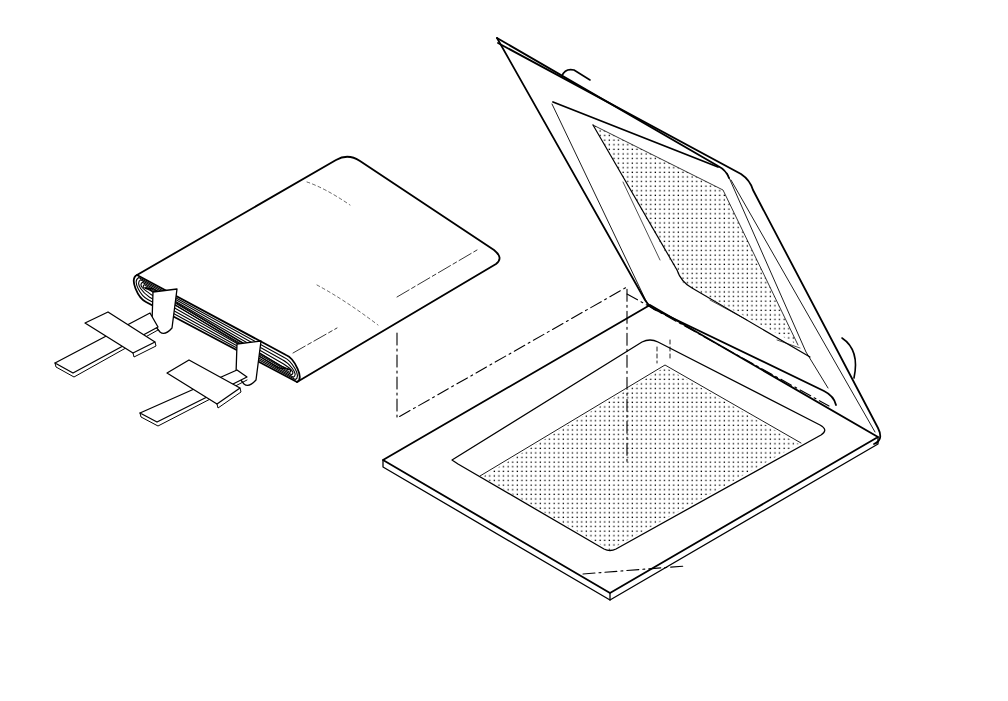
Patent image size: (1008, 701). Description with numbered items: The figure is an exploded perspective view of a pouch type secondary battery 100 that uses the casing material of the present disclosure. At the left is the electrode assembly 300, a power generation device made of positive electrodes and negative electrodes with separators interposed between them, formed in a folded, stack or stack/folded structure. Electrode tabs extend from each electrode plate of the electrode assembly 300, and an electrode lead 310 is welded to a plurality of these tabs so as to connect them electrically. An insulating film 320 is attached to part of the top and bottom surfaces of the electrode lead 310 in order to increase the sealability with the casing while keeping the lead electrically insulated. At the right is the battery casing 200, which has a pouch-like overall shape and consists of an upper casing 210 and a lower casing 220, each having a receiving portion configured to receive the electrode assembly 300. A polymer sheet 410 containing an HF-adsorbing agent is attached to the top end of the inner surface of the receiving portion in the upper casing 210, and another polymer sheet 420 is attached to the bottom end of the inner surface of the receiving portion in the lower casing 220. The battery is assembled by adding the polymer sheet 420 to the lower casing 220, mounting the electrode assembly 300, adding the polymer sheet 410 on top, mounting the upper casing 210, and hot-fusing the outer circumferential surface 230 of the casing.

The pouch type secondary battery 100 is at (250, 34).
The battery casing 200 is at (731, 126).
The upper casing 210 is at (832, 328).
The lower casing 220 is at (682, 542).
The outer circumferential surface 230 is at (798, 470).
The electrode assembly 300 is at (243, 225).
The electrode lead 310 is at (75, 356).
The insulating film 320 is at (100, 320).
The polymer sheet 410 is at (728, 232).
The polymer sheet 420 is at (718, 480).